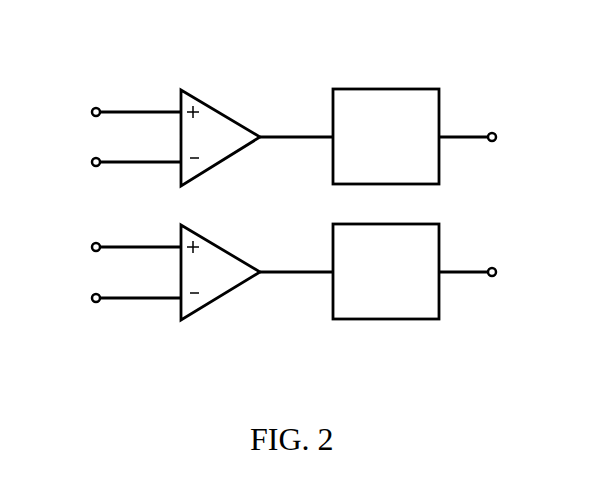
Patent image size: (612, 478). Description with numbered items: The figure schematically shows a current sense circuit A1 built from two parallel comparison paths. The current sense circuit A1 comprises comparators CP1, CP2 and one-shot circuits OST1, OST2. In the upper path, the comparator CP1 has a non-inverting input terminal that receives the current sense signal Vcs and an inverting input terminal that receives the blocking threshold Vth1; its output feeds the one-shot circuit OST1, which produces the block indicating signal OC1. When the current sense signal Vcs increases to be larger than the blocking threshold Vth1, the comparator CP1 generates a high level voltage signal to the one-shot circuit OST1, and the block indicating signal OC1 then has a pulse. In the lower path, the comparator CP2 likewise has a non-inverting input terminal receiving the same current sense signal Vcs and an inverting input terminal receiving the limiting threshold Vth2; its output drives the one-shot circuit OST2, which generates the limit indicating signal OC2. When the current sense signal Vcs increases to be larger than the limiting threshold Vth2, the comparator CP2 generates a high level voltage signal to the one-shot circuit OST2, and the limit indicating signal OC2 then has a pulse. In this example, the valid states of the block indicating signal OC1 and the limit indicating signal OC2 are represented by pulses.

The current sense circuit A1 is at (533, 40).
The current sense signal Vcs is at (109, 179).
The blocking threshold Vth1 is at (106, 161).
The limiting threshold Vth2 is at (106, 297).
The comparator CP1 is at (220, 138).
The comparator CP2 is at (220, 272).
The one-shot circuit OST1 is at (386, 136).
The one-shot circuit OST2 is at (386, 271).
The block indicating signal OC1 is at (497, 138).
The limit indicating signal OC2 is at (497, 272).